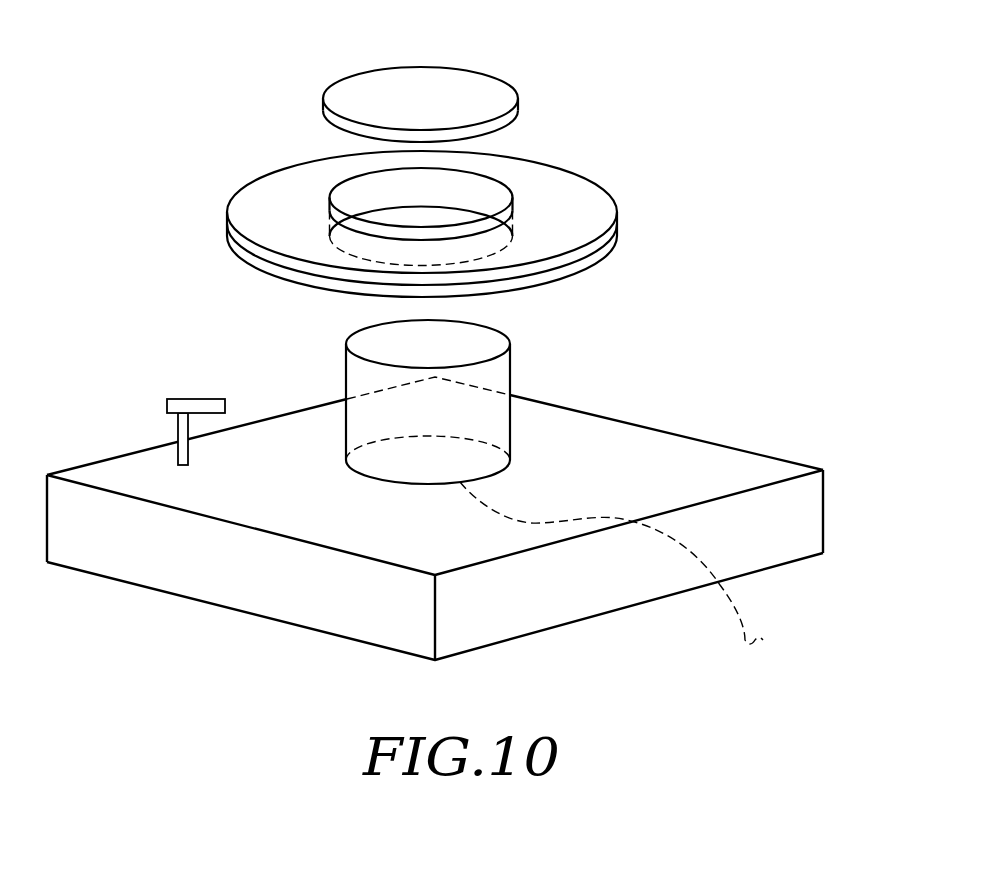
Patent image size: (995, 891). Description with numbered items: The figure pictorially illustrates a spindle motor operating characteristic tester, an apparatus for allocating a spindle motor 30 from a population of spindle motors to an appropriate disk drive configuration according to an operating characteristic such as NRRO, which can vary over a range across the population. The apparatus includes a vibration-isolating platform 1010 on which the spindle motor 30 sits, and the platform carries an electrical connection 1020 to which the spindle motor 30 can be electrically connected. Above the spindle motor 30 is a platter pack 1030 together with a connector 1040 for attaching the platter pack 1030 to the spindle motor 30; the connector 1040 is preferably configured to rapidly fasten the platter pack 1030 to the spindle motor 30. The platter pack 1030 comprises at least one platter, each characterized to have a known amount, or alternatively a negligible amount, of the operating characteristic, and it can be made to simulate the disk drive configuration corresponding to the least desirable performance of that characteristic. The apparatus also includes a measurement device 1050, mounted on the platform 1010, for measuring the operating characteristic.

The vibration-isolating platform 1010 is at (728, 445).
The electrical connection 1020 is at (738, 617).
The platter pack 1030 is at (626, 252).
The connector 1040 is at (518, 107).
The measurement device 1050 is at (167, 404).
The spindle motor 30 is at (510, 425).